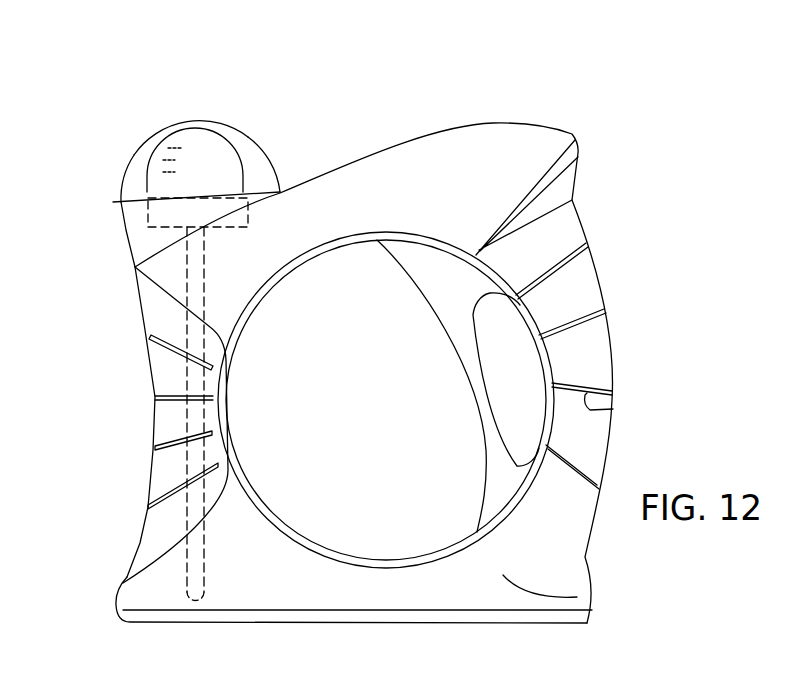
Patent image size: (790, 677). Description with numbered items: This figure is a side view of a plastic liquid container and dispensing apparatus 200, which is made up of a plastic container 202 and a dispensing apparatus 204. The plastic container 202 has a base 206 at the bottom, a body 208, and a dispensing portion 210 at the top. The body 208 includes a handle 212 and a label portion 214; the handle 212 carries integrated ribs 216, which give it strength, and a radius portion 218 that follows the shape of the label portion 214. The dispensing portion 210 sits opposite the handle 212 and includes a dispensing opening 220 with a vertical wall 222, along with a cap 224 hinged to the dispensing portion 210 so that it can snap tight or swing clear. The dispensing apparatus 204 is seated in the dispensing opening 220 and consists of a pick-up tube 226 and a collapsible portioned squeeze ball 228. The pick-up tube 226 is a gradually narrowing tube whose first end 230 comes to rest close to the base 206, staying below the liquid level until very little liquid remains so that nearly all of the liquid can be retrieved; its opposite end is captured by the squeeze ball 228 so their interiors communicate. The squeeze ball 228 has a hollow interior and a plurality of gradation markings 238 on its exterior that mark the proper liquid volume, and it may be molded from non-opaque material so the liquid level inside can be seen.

The plastic liquid container and dispensing apparatus 200 is at (617, 118).
The plastic container 202 is at (585, 557).
The dispensing apparatus 204 is at (145, 156).
The base 206 is at (530, 623).
The body 208 is at (153, 422).
The dispensing portion 210 is at (113, 202).
The handle 212 is at (613, 352).
The label portion 214 is at (383, 428).
The integrated ribs 216 is at (613, 409).
The radius portion 218 is at (603, 279).
The dispensing opening 220 is at (148, 224).
The vertical wall 222 is at (130, 190).
The cap 224 is at (270, 162).
The pick-up tube 226 is at (187, 323).
The collapsible portioned squeeze ball 228 is at (197, 135).
The first end 230 is at (190, 612).
The gradation markings 238 is at (178, 148).